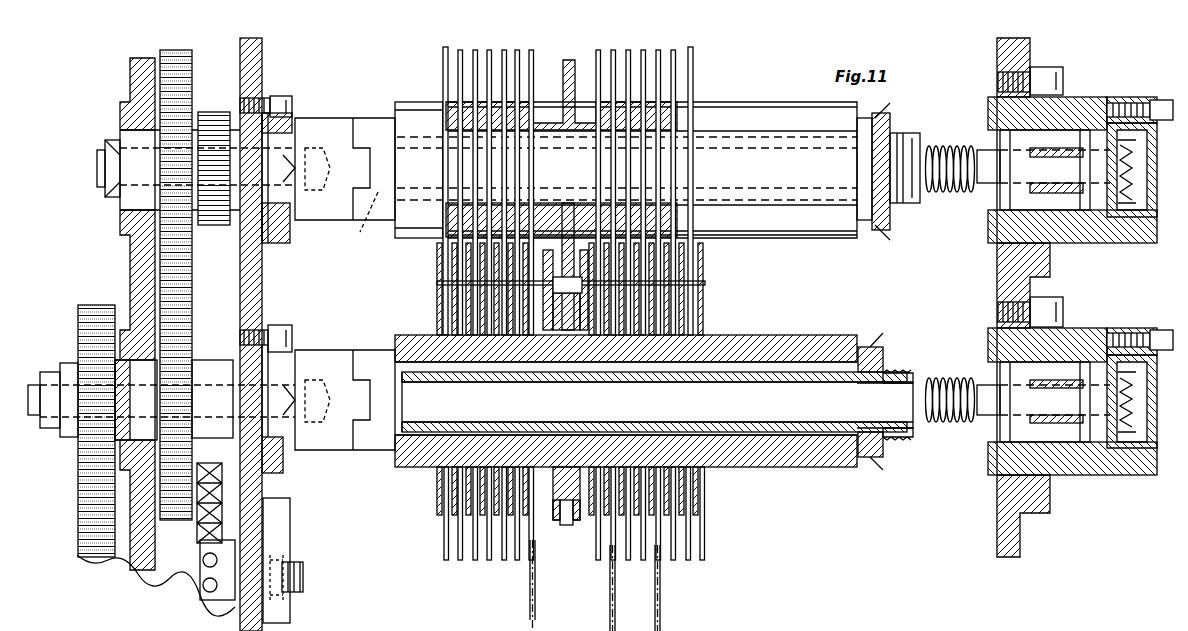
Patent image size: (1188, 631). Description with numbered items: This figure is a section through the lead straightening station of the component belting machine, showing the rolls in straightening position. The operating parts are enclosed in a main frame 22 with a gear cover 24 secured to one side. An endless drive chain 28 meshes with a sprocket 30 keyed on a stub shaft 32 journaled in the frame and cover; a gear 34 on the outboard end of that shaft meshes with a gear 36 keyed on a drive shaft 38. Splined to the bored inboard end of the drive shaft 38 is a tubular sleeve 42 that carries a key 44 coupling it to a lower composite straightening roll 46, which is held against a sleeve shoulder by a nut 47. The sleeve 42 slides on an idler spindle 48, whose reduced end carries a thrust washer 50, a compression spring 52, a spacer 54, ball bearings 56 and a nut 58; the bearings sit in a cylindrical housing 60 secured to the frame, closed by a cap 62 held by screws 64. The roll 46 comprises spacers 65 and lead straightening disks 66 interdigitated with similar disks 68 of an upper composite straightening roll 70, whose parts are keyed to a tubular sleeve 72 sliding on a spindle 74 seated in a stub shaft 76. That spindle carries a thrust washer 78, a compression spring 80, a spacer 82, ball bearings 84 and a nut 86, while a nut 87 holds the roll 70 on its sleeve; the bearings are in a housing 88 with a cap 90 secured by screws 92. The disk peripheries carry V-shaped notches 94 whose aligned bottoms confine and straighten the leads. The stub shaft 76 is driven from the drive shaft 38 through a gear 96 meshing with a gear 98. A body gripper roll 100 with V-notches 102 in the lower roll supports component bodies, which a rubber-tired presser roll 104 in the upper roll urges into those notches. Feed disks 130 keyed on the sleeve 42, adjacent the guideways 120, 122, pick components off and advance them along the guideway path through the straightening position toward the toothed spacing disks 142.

The main frame 22 is at (262, 46).
The gear cover 24 is at (130, 68).
The endless drive chain 28 is at (226, 450).
The sprocket 30 is at (195, 578).
The stub shaft 32 is at (303, 577).
The gear 34 is at (78, 510).
The gear 36 is at (96, 305).
The drive shaft 38 is at (33, 386).
The tubular sleeve 42 is at (372, 452).
The key 44 is at (508, 382).
The lower composite straightening roll 46 is at (766, 335).
The nut 47 is at (884, 362).
The idler spindle 48 is at (780, 435).
The thrust washer 50 is at (912, 437).
The compression spring 52 is at (940, 425).
The spacer 54 is at (977, 385).
The ball bearings 56 is at (1080, 433).
The nut 58 is at (1120, 390).
The cylindrical housing 60 is at (1075, 328).
The cap 62 is at (1162, 450).
The screws 64 is at (1168, 330).
The spacers 65 is at (496, 372).
The lead straightening disks 66 is at (440, 330).
The straightening disks 68 is at (445, 90).
The upper composite straightening roll 70 is at (786, 107).
The tubular sleeve 72 is at (352, 118).
The spindle 74 is at (368, 220).
The stub shaft 76 is at (100, 170).
The thrust washer 78 is at (915, 200).
The compression spring 80 is at (968, 193).
The spacer 82 is at (977, 150).
The ball bearings 84 is at (1080, 203).
The nut 86 is at (1120, 160).
The nut 87 is at (890, 142).
The cylindrical housing 88 is at (1097, 97).
The cap 90 is at (1160, 218).
The screws 92 is at (1168, 100).
The V-shaped notches 94 is at (504, 50).
The gear 96 is at (180, 50).
The gear 98 is at (192, 332).
The body gripper roll 100 is at (556, 520).
The V-notches 102 is at (582, 372).
The rubber-tired presser roll 104 is at (586, 50).
The guideway 120 is at (567, 258).
The guideway 122 is at (548, 372).
The feed disks 130 is at (594, 575).
The spacing disks 142 is at (530, 612).